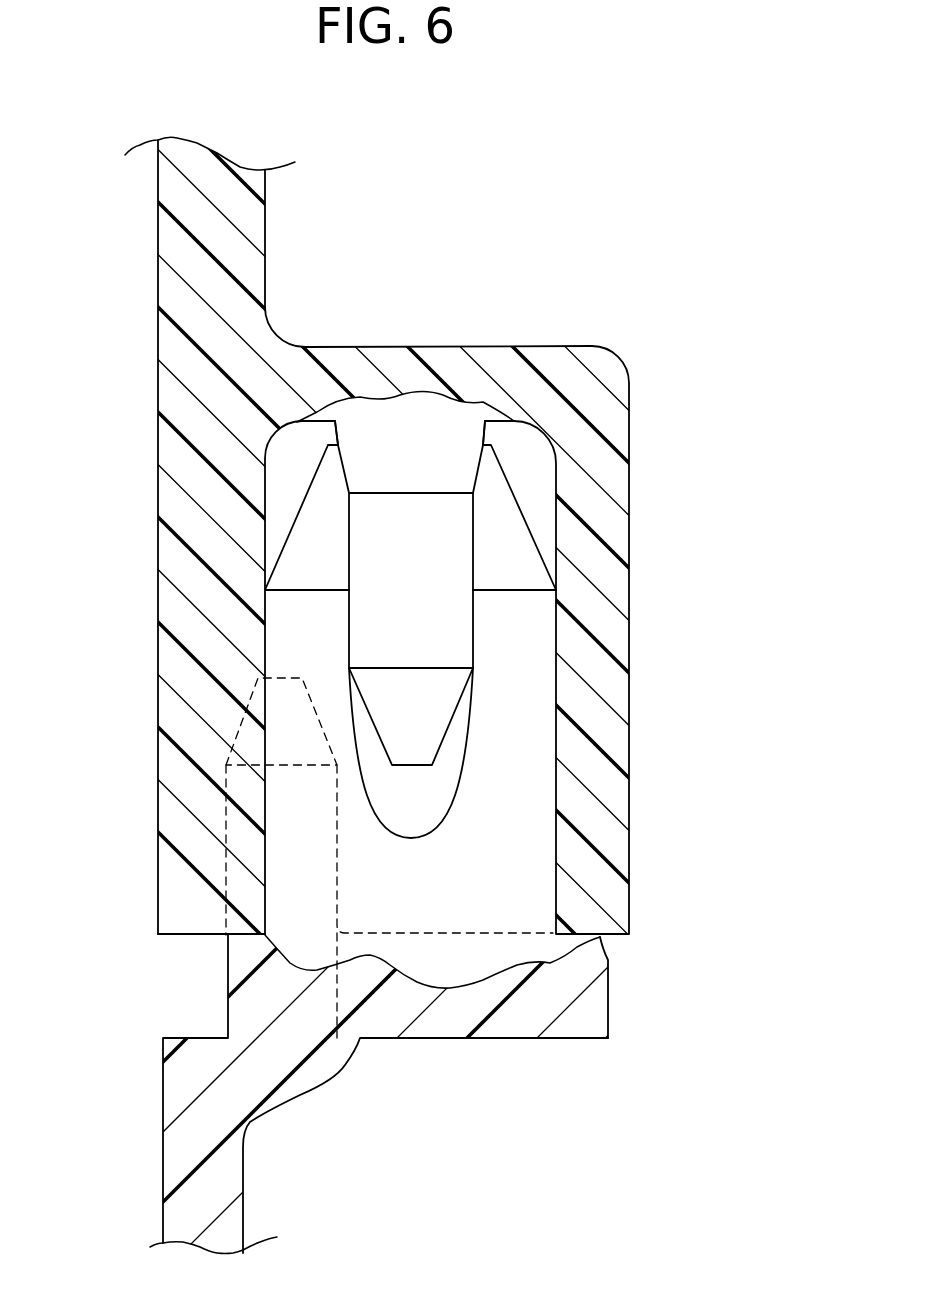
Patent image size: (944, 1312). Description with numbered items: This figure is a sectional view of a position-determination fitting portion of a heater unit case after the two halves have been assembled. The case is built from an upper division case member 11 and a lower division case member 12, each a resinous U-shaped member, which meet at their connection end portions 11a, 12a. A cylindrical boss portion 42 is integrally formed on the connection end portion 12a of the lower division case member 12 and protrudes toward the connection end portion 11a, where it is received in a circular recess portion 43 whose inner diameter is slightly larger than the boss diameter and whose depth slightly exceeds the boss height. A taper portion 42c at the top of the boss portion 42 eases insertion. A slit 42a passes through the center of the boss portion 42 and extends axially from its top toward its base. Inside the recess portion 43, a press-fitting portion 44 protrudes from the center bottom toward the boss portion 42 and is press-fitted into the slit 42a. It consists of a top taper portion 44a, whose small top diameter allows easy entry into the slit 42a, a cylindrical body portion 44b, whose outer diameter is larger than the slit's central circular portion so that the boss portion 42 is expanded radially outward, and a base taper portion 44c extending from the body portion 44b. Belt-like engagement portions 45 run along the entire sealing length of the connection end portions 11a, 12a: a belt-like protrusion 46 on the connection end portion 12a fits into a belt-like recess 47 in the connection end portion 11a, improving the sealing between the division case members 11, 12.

The upper division case member 11 is at (200, 218).
The connection end portion 11a is at (205, 937).
The lower division case member 12 is at (243, 1185).
The connection end portion 12a is at (608, 960).
The cylindrical boss portion 42 is at (528, 862).
The slit 42a is at (445, 768).
The taper portion 42c is at (510, 487).
The circular recess portion 43 is at (287, 508).
The press-fitting portion 44 is at (447, 632).
The top taper portion 44a is at (437, 705).
The body portion 44b is at (443, 550).
The base taper portion 44c is at (387, 452).
The belt-like engagement portions 45 is at (190, 857).
The belt-like protrusion 46 is at (226, 857).
The belt-like recess 47 is at (226, 857).